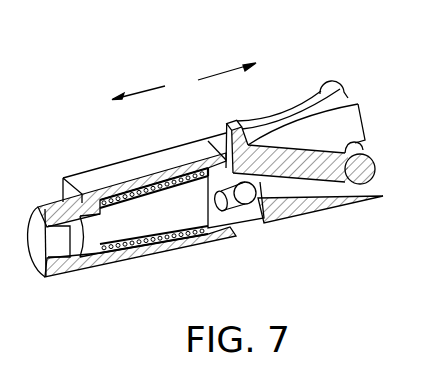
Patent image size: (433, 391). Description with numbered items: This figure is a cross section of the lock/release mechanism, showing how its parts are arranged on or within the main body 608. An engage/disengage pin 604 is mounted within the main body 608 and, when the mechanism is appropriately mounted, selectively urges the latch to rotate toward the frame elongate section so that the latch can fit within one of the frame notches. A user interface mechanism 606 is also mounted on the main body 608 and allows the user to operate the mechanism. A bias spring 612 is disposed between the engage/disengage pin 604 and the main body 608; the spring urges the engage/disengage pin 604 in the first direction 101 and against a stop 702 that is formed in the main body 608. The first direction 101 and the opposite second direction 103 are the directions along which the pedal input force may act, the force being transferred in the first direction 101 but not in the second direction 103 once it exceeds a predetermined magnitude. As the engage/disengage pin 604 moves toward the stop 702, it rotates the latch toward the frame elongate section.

The first direction 101 is at (215, 68).
The second direction 103 is at (150, 85).
The engage/disengage pin 604 is at (130, 229).
The user interface mechanism 606 is at (332, 78).
The main body 608 is at (103, 174).
The bias spring 612 is at (173, 186).
The stop 702 is at (250, 218).